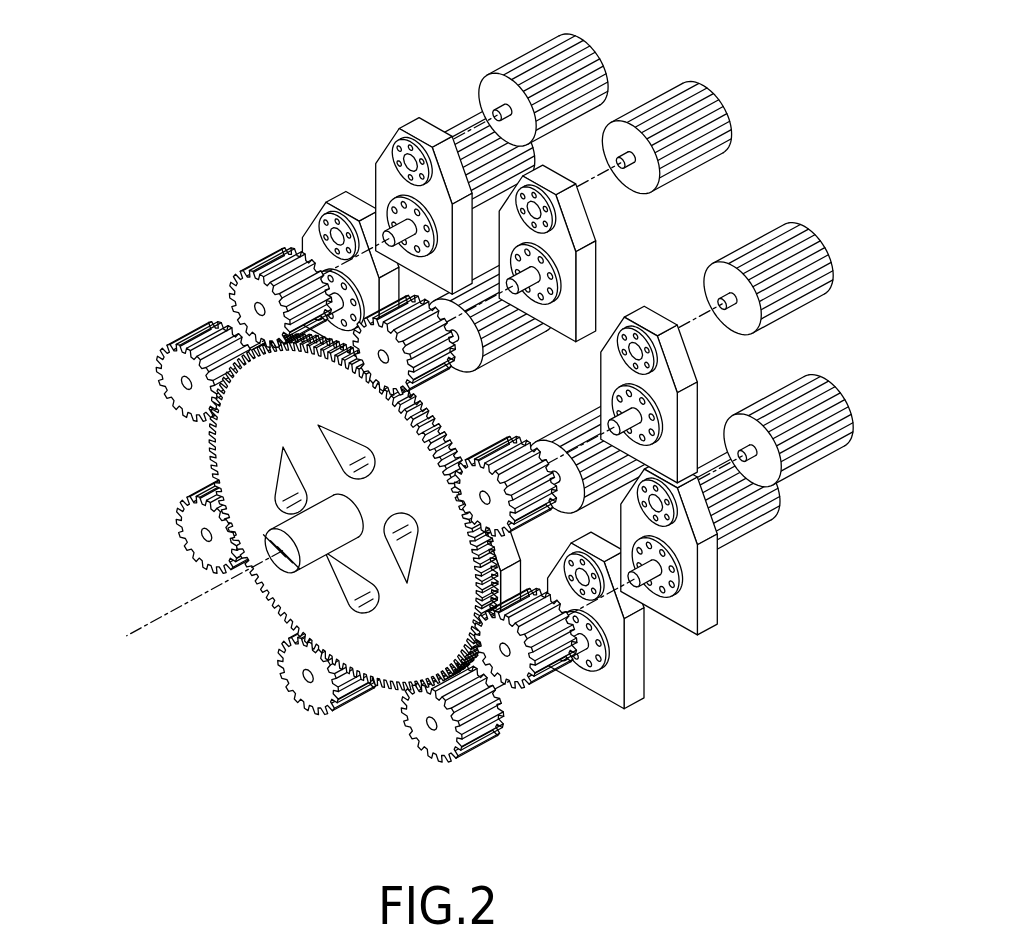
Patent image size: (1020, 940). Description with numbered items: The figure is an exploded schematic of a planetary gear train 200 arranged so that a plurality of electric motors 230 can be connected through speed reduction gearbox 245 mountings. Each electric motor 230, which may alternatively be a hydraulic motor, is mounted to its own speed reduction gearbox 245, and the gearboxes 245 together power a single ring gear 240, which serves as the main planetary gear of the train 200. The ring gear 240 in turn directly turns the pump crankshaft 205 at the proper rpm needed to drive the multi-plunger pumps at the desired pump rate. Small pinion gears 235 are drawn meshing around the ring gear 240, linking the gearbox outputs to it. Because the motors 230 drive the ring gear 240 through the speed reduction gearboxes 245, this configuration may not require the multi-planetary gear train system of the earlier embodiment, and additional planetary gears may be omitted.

The planetary gear train 200 is at (463, 387).
The pump crankshaft 205 is at (287, 562).
The electric motor 230 is at (712, 100).
The pinion gear 235 is at (258, 275).
The ring gear 240 is at (208, 452).
The speed reduction gearbox 245 is at (592, 271).